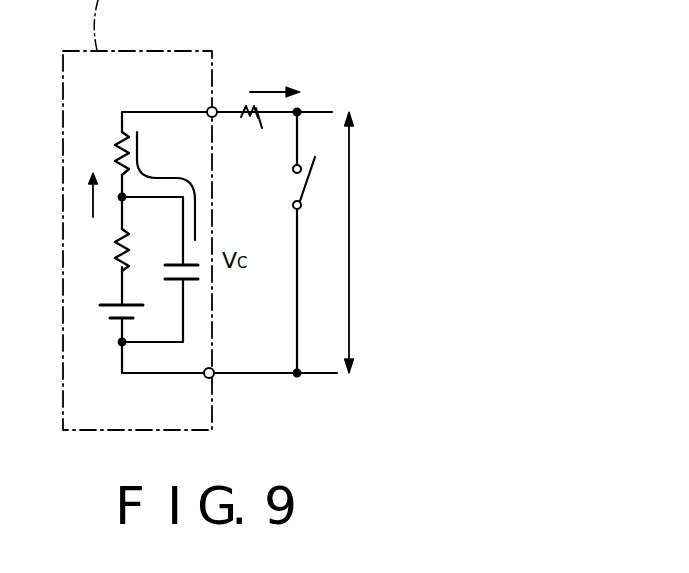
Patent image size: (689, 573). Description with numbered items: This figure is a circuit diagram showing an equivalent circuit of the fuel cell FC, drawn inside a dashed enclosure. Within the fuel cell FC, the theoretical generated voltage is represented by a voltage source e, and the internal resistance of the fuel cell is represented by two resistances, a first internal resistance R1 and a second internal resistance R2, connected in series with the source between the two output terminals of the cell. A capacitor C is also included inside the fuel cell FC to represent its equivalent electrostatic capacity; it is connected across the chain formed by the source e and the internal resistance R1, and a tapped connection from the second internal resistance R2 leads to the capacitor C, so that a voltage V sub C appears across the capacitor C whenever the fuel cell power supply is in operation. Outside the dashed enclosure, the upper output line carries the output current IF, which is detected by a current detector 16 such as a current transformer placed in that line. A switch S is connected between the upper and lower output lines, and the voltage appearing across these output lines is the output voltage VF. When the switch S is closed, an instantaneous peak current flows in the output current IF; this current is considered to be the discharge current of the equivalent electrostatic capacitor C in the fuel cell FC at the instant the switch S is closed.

The current detector 16 is at (247, 103).
The fuel cell FC is at (137, 224).
The internal resistance R1 is at (104, 250).
The internal resistance R2 is at (104, 174).
The generated voltage e is at (108, 314).
The capacitor C is at (192, 279).
The switch S is at (310, 183).
The output current IF is at (285, 91).
The output voltage VF is at (345, 242).